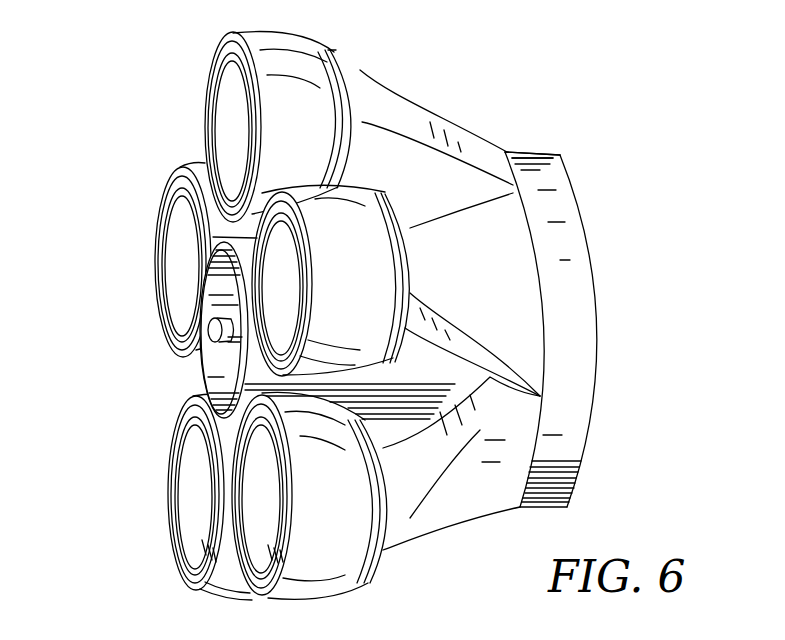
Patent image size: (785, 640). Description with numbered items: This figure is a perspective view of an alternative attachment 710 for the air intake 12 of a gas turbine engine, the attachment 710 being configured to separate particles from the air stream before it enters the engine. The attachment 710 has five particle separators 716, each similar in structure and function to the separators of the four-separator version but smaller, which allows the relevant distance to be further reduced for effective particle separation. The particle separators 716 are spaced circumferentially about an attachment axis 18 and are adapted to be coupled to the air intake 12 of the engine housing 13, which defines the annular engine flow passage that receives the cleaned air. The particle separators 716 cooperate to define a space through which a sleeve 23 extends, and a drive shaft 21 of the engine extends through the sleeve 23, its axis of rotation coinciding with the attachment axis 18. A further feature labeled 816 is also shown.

The attachment 710 is at (386, 320).
The particle separator 716 is at (308, 43).
The air intake 12 is at (542, 160).
The engine housing 13 is at (575, 241).
The attachment axis 18 is at (137, 329).
The drive shaft 21 is at (213, 340).
The sleeve 23 is at (185, 329).
The outlet portion 816 is at (448, 628).